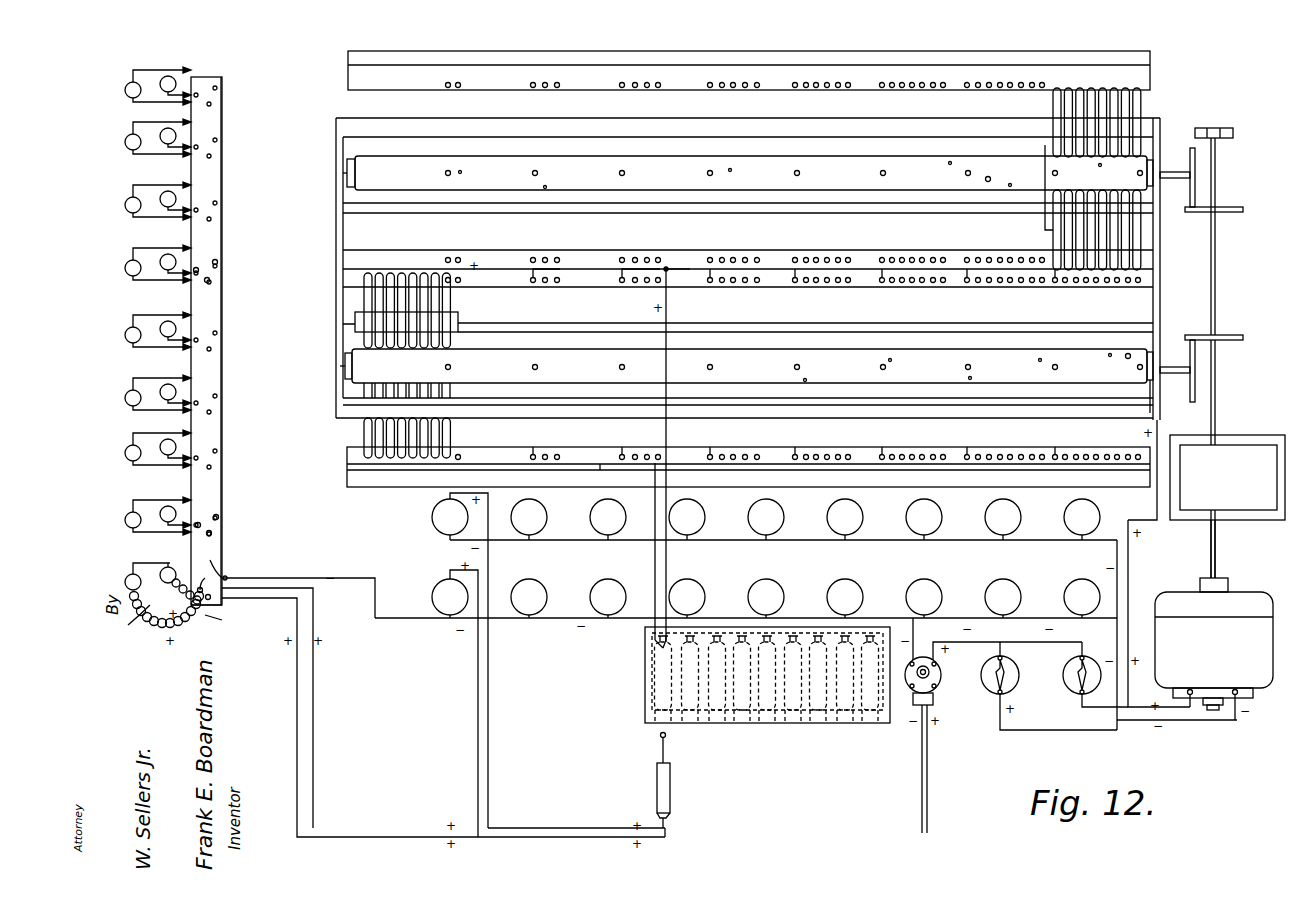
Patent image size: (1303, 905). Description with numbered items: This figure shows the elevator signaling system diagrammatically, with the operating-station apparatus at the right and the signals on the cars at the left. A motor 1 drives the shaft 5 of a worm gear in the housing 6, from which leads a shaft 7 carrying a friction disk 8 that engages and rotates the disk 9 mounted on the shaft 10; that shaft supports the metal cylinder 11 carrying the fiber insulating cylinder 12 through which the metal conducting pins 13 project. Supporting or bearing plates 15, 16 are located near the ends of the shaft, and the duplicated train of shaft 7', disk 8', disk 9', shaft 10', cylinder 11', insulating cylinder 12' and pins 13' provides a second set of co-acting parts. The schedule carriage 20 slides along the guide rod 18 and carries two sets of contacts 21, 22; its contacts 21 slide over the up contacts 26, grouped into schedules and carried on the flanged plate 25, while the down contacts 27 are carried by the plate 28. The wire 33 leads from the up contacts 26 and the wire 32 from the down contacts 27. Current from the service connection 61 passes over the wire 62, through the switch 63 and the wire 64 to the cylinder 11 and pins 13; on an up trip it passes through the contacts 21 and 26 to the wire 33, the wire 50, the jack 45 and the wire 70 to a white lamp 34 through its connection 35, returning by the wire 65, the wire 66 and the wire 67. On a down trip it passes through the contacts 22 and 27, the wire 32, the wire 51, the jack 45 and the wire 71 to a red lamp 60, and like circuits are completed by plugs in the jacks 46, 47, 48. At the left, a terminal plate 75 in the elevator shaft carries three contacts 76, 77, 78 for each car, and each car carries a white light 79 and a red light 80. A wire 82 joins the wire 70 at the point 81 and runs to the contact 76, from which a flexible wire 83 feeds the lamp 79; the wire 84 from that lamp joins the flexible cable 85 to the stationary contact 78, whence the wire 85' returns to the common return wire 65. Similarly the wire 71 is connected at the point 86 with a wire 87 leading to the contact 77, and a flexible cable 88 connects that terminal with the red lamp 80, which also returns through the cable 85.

The motor 1 is at (1273, 655).
The worm gear shaft 5 is at (1216, 553).
The housing 6 is at (1258, 455).
The shaft 7 is at (1226, 459).
The extended shaft 7' is at (1229, 236).
The friction disk 8 is at (1216, 323).
The friction disk 8' is at (1223, 195).
The disk 9 is at (1215, 372).
The disk 9' is at (1220, 177).
The shaft 10 is at (1175, 392).
The shaft 10' is at (1176, 162).
The metal cylinder 11 is at (1168, 359).
The metal cylinder 11' is at (1171, 145).
The fiber insulating cylinder 12 is at (1117, 346).
The fiber insulating cylinder 12' is at (993, 151).
The metal conducting pins 13 is at (743, 366).
The metal conducting pins 13' is at (745, 155).
The supporting plate 15 is at (1160, 268).
The supporting plate 16 is at (343, 226).
The guide rod 18 is at (755, 327).
The schedule carriage 20 is at (458, 325).
The set of contacts 21 is at (452, 432).
The set of contacts 22 is at (452, 300).
The flanged plate 25 is at (358, 480).
The up contacts 26 is at (716, 455).
The down contacts 27 is at (634, 283).
The plate 28 is at (588, 280).
The wire 32 is at (689, 268).
The wire 33 is at (603, 462).
The white lamps 34 is at (455, 592).
The connection 35 is at (446, 585).
The jack 45 is at (655, 665).
The jack 46 is at (690, 712).
The jack 47 is at (717, 712).
The jack 48 is at (743, 712).
The wire 50 is at (655, 572).
The wire 51 is at (668, 560).
The red lamps 60 is at (445, 505).
The service connection 61 is at (927, 760).
The wire 62 is at (1040, 648).
The switch 63 is at (1019, 683).
The wire 64 is at (1130, 572).
The wire 65 is at (572, 620).
The wire 66 is at (913, 640).
The wire 67 is at (921, 745).
The wires 70 is at (478, 712).
The wires 71 is at (488, 748).
The terminal plate 75 is at (212, 190).
The contact 76 is at (210, 281).
The contact 77 is at (196, 267).
The contact 78 is at (218, 263).
The white light 79 is at (127, 330).
The red light 80 is at (168, 320).
The point 81 is at (488, 838).
The wire 82 is at (297, 692).
The flexible wire 83 is at (160, 632).
The wire 84 is at (163, 570).
The flexible cable 85 is at (209, 557).
The wire 85' is at (298, 588).
The point 86 is at (490, 826).
The wire 87 is at (313, 693).
The flexible cable 88 is at (140, 622).